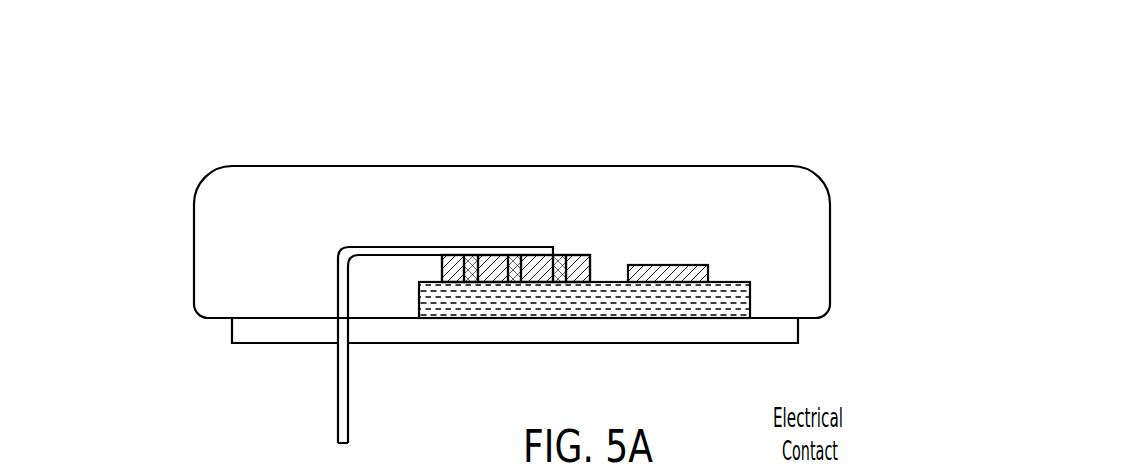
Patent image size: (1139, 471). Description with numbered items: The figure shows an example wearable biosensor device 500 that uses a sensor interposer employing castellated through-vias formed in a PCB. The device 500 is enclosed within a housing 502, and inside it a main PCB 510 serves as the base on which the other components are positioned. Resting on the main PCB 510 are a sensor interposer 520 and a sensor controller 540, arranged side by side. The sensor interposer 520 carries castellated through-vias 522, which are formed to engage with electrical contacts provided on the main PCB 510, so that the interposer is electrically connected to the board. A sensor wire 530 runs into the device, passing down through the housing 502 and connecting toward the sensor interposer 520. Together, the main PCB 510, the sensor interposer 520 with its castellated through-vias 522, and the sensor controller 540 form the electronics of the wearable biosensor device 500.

The wearable biosensor device 500 is at (593, 231).
The housing 502 is at (195, 233).
The main PCB 510 is at (743, 312).
The sensor interposer 520 is at (590, 258).
The castellated through-vias 522 is at (565, 250).
The sensor wire 530 is at (338, 392).
The sensor controller 540 is at (708, 272).